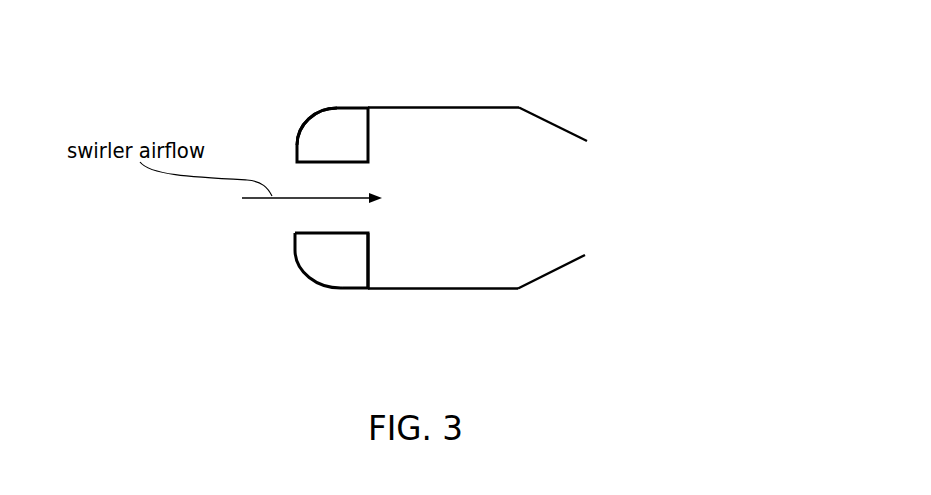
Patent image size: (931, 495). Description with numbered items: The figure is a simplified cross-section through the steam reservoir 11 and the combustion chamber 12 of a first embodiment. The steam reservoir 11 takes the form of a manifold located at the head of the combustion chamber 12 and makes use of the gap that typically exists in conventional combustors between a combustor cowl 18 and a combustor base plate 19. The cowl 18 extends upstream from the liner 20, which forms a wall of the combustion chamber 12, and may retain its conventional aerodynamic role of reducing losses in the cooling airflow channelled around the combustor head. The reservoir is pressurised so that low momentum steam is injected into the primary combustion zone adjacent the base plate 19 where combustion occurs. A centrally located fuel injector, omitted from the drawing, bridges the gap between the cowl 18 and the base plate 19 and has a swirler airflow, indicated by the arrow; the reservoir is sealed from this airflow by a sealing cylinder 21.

The steam reservoir 11 is at (346, 135).
The combustor cowl 18 is at (297, 143).
The combustion chamber 12 is at (454, 128).
The liner 20 is at (497, 107).
The sealing cylinder 21 is at (320, 233).
The combustor base plate 19 is at (370, 258).